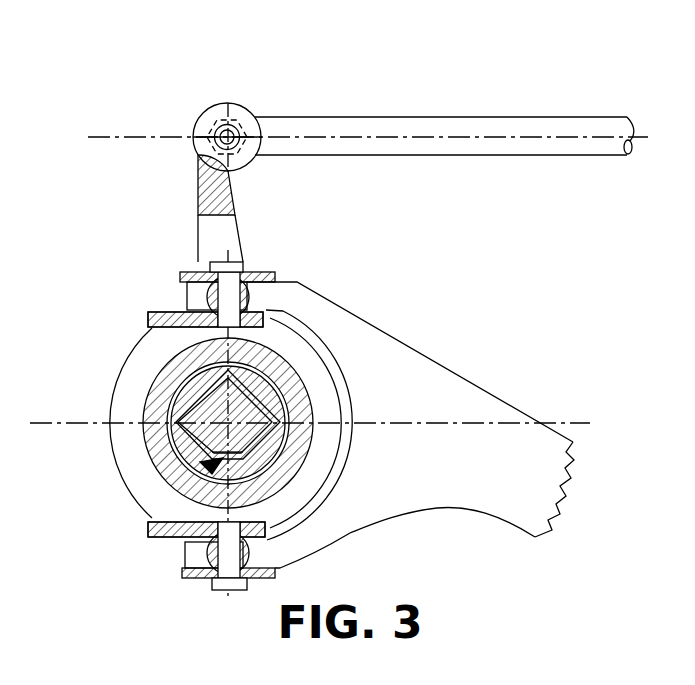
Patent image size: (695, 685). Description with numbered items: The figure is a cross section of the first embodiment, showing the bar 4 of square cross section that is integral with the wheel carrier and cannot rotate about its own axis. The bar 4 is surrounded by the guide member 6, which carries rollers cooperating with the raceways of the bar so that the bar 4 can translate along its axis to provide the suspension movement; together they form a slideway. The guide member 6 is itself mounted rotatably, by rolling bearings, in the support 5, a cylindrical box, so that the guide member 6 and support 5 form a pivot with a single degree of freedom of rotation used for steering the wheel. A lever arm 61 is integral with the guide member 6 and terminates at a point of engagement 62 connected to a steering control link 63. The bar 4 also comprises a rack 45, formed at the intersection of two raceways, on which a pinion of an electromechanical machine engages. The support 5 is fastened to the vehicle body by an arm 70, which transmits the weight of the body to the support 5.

The bar 4 is at (158, 370).
The support 5 is at (127, 398).
The guide member 6 is at (158, 457).
The rack 45 is at (218, 505).
The lever arm 61 is at (218, 230).
The point of engagement 62 is at (235, 130).
The steering control link 63 is at (473, 123).
The arm 70 is at (432, 382).